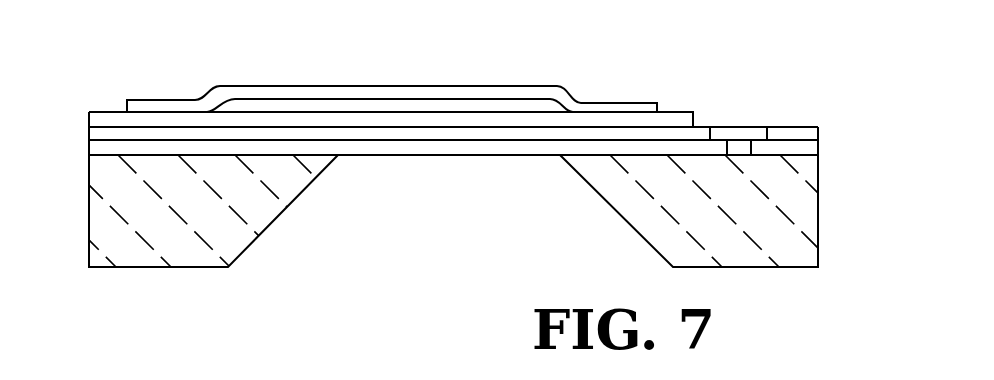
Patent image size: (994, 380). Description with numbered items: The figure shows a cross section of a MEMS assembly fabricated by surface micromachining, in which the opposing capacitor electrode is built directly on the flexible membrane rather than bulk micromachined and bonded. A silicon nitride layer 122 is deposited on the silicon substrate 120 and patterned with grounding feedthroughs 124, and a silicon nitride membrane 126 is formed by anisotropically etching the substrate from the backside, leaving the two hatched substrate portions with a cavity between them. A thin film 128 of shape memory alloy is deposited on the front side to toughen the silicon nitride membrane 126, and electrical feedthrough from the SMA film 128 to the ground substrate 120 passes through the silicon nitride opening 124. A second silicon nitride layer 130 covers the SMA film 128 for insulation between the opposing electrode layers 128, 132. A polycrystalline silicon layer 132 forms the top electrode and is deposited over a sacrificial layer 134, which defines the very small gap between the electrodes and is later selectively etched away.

The silicon substrate 120 is at (745, 237).
The silicon nitride layer 122 is at (819, 147).
The grounding feedthrough 124 is at (740, 150).
The silicon nitride membrane 126 is at (432, 156).
The shape memory alloy thin film 128 is at (819, 130).
The second silicon nitride layer 130 is at (675, 112).
The polycrystalline silicon layer 132 is at (469, 86).
The sacrificial layer 134 is at (285, 107).